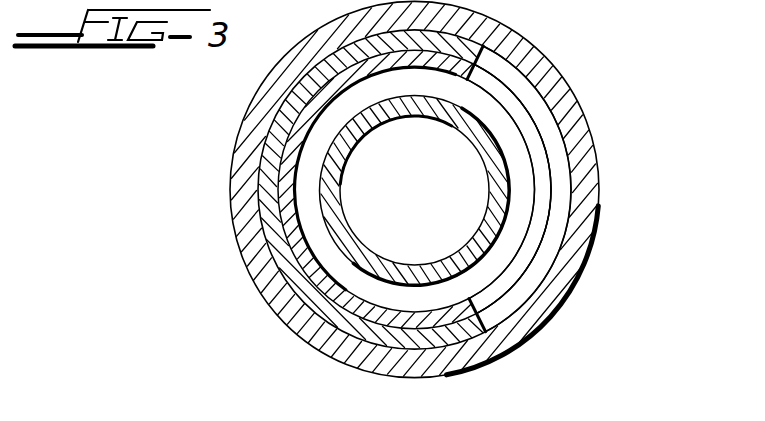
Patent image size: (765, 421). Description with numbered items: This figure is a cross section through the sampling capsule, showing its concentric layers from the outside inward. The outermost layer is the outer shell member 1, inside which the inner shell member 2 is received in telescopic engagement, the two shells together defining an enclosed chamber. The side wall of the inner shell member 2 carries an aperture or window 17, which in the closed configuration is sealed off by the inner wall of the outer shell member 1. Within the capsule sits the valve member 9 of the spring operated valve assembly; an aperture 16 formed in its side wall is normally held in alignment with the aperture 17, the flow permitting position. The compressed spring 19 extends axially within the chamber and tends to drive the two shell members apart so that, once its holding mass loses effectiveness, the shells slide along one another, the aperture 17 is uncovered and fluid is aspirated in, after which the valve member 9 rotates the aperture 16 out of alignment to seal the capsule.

The outer shell member 1 is at (558, 86).
The inner shell member 2 is at (492, 22).
The valve member 9 is at (292, 144).
The aperture 16 is at (527, 252).
The aperture or window 17 is at (560, 204).
The compressed spring 19 is at (490, 163).